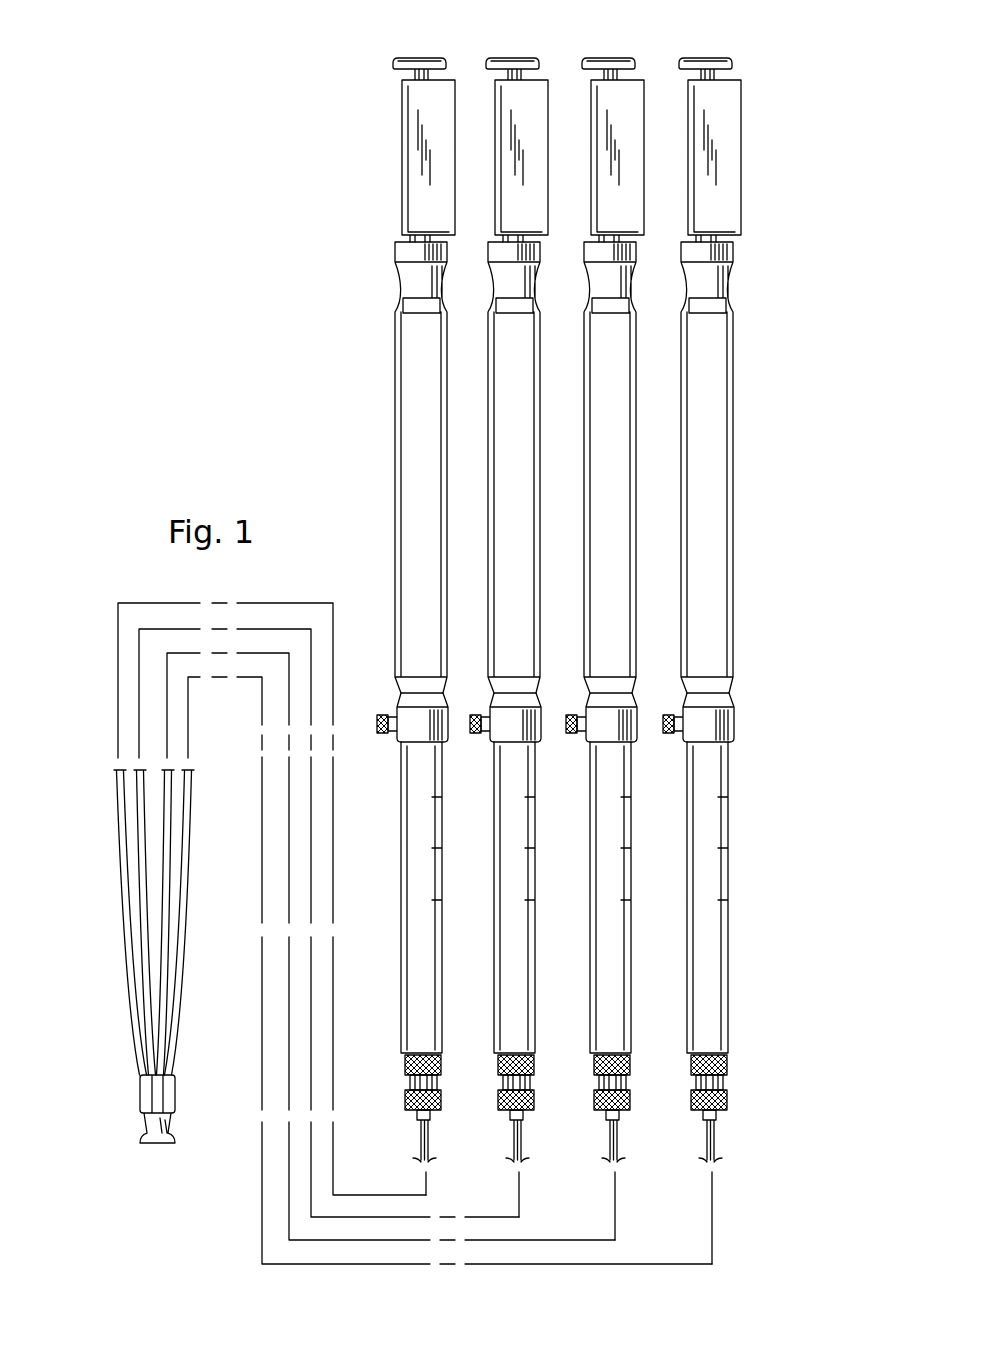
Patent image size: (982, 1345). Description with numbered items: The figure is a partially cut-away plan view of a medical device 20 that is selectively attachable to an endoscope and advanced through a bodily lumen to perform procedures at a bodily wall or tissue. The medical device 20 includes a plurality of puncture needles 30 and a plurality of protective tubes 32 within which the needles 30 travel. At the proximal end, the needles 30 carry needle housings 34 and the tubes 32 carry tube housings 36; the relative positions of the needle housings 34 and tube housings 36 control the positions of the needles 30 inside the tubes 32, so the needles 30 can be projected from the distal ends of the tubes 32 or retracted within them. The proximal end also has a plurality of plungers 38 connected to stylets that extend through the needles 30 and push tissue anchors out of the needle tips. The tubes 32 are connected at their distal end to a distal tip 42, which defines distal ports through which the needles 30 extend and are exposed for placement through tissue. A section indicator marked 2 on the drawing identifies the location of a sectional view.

The medical device 20 is at (238, 218).
The puncture needles 30 is at (563, 535).
The tubes 32 is at (513, 1133).
The needle housings 34 is at (512, 518).
The tube housings 36 is at (413, 855).
The plungers 38 is at (402, 57).
The distal tip 42 is at (176, 1128).
The section line 2- 2 is at (155, 1035).